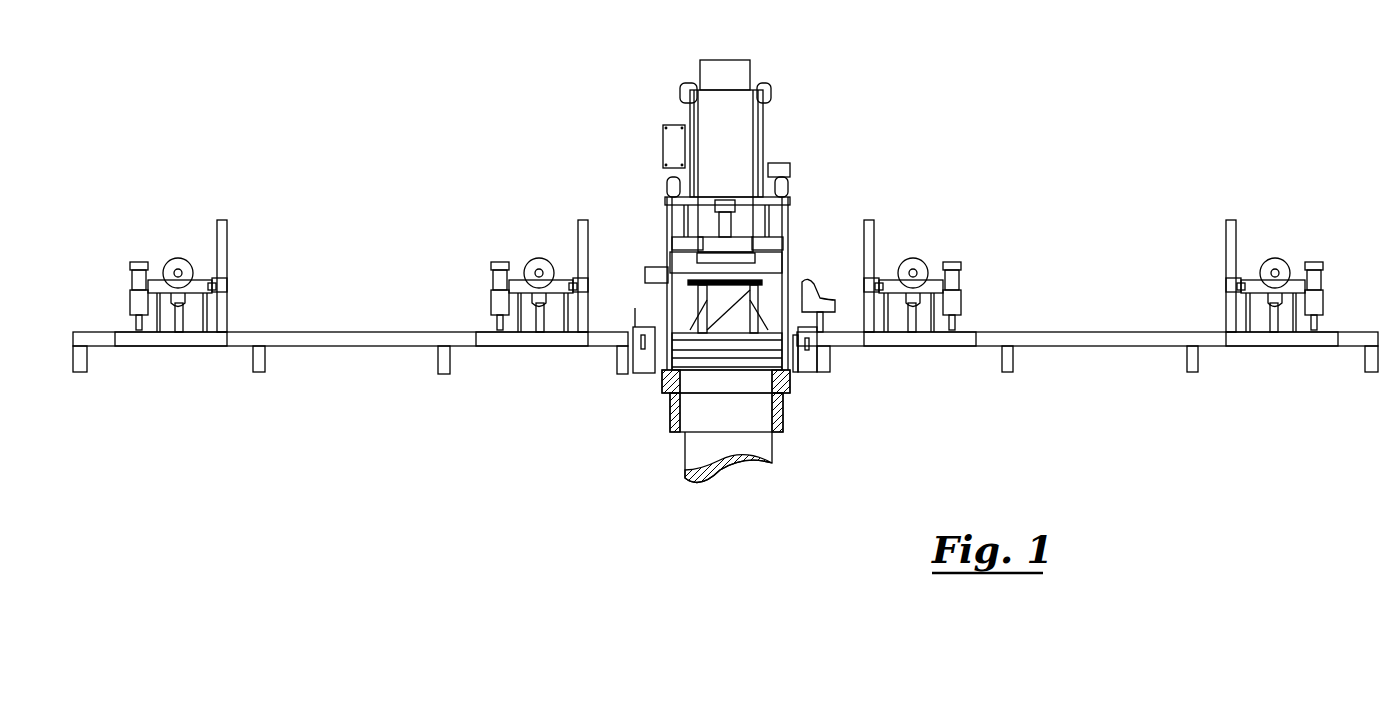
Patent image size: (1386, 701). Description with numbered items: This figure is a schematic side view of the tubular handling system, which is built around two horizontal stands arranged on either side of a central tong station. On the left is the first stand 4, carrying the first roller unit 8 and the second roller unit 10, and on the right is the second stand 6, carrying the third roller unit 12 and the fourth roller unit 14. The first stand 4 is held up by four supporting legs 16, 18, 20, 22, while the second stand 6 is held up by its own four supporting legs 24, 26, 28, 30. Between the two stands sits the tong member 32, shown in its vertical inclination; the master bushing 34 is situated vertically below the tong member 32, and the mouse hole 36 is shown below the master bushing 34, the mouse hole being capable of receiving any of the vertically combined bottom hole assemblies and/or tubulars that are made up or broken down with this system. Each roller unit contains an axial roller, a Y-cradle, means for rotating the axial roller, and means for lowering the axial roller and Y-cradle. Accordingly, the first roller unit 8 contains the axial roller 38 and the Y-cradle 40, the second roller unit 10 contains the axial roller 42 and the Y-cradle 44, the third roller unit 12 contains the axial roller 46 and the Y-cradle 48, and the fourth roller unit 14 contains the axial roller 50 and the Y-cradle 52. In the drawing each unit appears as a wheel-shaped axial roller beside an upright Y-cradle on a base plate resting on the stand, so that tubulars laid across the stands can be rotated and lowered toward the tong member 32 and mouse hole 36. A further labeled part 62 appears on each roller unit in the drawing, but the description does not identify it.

The first stand 4 is at (345, 343).
The second stand 6 is at (1083, 335).
The first roller unit 8 is at (701, 301).
The second roller unit 10 is at (507, 251).
The third roller unit 12 is at (944, 257).
The fourth roller unit 14 is at (1287, 250).
The supporting leg 16 is at (82, 362).
The supporting leg 18 is at (257, 368).
The supporting leg 20 is at (440, 368).
The supporting leg 22 is at (618, 367).
The supporting leg 24 is at (830, 363).
The supporting leg 26 is at (1013, 365).
The supporting leg 28 is at (1193, 362).
The supporting leg 30 is at (1372, 358).
The tong member 32 is at (770, 243).
The master bushing 34 is at (670, 420).
The mouse hole 36 is at (758, 445).
The axial roller 38 is at (178, 262).
The Y-cradle 40 is at (142, 262).
The axial roller 42 is at (540, 258).
The Y-cradle 44 is at (503, 260).
The axial roller 46 is at (912, 258).
The Y-cradle 48 is at (952, 258).
The axial roller 50 is at (1272, 260).
The Y-cradle 52 is at (1313, 258).
The cross bar 62 is at (203, 287).